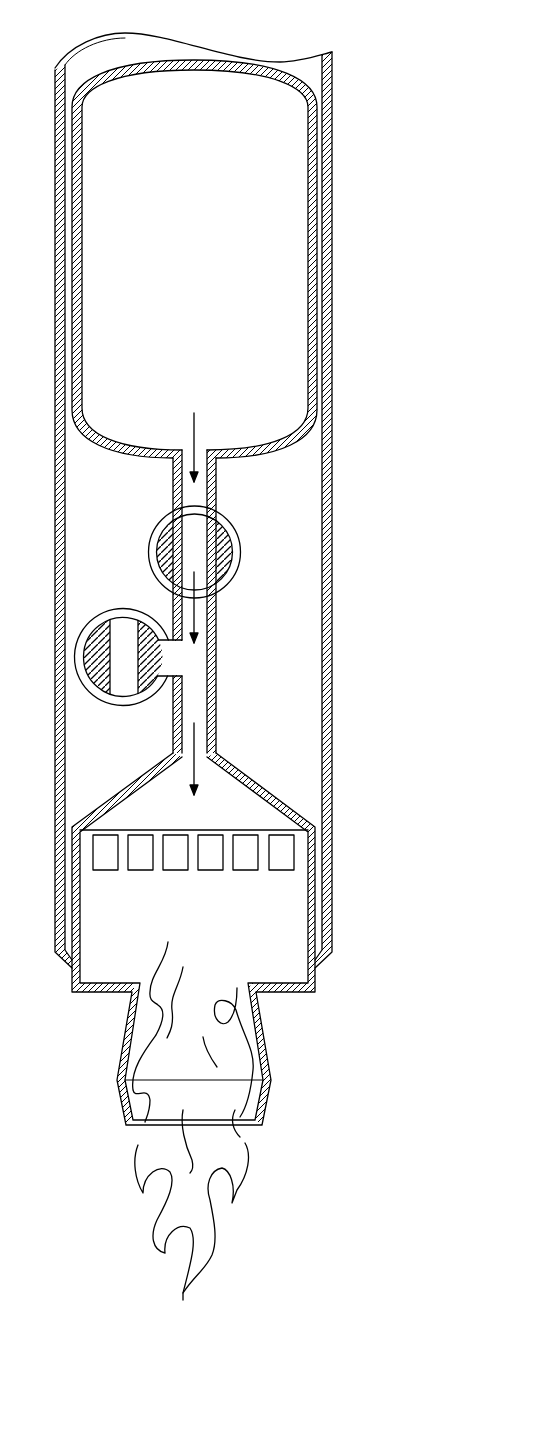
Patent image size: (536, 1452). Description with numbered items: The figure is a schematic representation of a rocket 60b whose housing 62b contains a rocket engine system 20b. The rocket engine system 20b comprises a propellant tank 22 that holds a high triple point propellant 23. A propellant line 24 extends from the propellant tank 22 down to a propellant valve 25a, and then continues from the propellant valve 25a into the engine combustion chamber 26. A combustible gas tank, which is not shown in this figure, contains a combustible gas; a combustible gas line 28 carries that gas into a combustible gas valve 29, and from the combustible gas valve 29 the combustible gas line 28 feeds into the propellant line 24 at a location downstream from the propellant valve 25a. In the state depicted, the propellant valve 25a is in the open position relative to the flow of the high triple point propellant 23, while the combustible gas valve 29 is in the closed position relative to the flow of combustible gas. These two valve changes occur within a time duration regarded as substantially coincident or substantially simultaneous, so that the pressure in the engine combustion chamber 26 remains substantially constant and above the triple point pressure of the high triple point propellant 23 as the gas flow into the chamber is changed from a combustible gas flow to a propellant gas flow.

The rocket 60b is at (367, 462).
The outer housing 62b is at (333, 742).
The propellant tank 22 is at (317, 312).
The high triple point propellant 23 is at (245, 233).
The rocket engine system 20b is at (258, 538).
The propellant line 24 is at (173, 482).
The propellant valve 25a is at (233, 580).
The combustible gas valve 29 is at (132, 610).
The combustible gas line 28 is at (76, 638).
The engine combustion chamber 26 is at (140, 778).